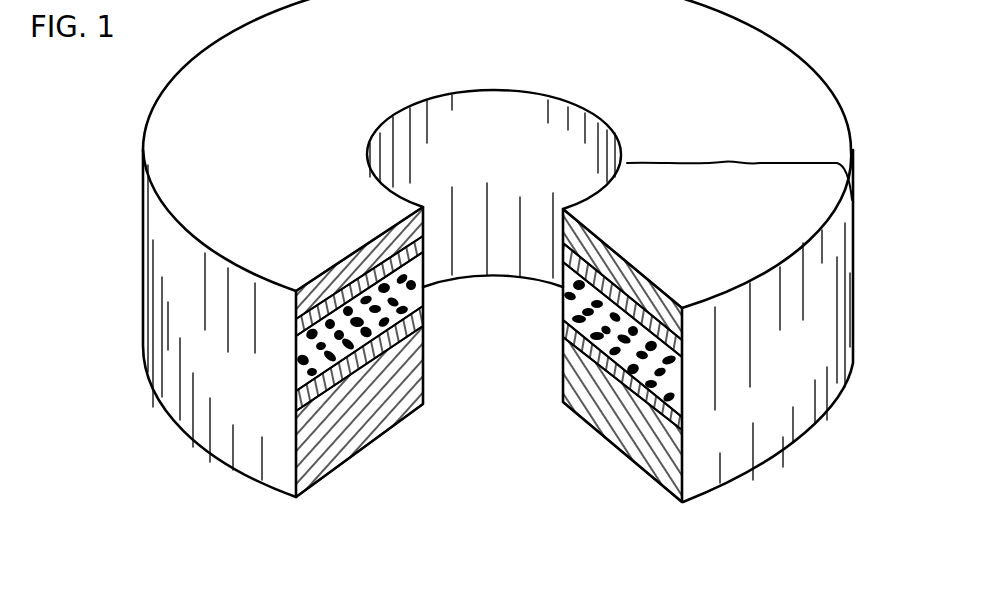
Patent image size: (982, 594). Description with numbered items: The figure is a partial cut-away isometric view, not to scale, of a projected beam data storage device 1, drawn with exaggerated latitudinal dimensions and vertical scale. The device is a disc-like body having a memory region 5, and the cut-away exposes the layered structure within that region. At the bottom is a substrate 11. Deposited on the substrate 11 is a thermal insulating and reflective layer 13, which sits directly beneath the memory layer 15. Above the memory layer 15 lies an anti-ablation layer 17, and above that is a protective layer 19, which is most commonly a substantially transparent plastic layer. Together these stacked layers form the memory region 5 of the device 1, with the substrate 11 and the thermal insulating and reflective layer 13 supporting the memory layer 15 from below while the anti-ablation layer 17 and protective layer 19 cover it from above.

The projected beam data storage device 1 is at (492, 440).
The memory region 5 is at (727, 160).
The substrate 11 is at (320, 443).
The thermal insulating and reflective layer 13 is at (293, 406).
The memory layer 15 is at (293, 365).
The anti-ablation layer 17 is at (293, 330).
The protective layer 19 is at (295, 290).